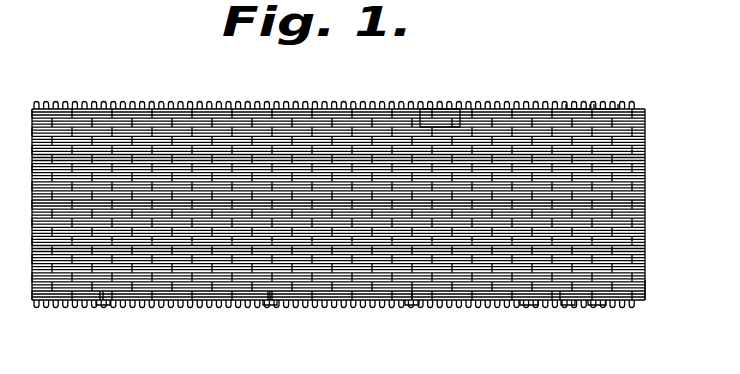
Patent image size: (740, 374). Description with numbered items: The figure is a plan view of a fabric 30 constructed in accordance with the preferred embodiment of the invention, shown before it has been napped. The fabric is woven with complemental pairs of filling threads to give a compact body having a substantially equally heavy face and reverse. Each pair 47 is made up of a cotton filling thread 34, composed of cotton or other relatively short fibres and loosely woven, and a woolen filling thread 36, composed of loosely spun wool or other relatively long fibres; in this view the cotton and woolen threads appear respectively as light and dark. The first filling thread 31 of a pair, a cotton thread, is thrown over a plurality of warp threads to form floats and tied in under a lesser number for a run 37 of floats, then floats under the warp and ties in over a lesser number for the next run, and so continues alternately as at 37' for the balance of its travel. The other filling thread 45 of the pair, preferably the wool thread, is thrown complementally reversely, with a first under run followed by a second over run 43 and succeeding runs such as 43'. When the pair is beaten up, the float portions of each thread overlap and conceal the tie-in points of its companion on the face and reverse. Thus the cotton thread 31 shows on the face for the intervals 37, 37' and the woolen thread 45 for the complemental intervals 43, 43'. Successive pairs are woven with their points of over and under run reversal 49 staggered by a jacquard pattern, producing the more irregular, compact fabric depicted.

The fabric 30 is at (436, 112).
The woolen filling thread 36 is at (578, 103).
The cotton filling thread 34 is at (606, 104).
The pair of filling threads 47 is at (646, 293).
The filling thread 31 is at (598, 305).
The other filling thread 45 is at (530, 305).
The points of over and under run reversal 49 is at (103, 305).
The over run 43 is at (185, 315).
The over run 43' is at (486, 312).
The run of floats 37 is at (69, 311).
The run of floats 37' is at (341, 312).